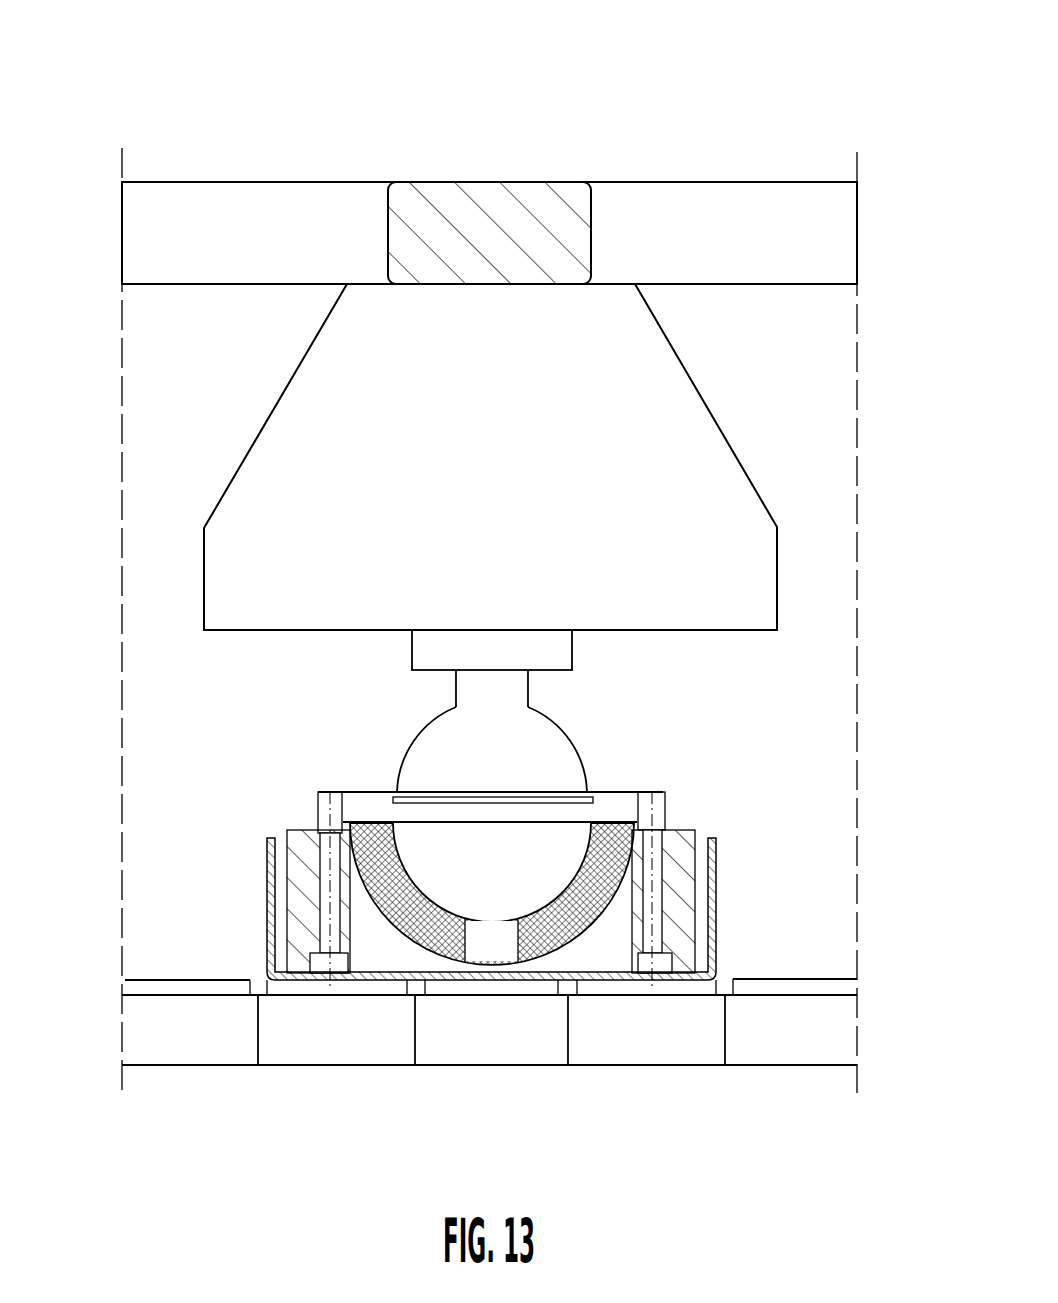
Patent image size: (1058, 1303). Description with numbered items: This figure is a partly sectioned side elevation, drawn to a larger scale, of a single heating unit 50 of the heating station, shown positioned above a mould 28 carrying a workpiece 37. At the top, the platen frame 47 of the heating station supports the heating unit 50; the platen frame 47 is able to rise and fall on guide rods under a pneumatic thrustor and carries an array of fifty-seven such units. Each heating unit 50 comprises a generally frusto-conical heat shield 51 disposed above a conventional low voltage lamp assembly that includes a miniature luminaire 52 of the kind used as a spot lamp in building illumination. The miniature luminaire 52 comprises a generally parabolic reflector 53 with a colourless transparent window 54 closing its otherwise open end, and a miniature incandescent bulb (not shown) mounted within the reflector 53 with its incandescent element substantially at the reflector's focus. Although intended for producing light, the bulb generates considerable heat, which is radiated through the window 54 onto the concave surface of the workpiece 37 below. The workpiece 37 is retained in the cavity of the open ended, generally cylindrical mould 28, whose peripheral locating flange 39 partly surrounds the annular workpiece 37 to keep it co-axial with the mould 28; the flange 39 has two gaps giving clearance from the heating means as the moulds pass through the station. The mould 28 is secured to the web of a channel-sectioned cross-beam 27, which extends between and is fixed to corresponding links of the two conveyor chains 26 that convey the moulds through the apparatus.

The conveyor chains 26 is at (489, 1083).
The cross-beam 27 is at (602, 909).
The mould 28 is at (612, 926).
The workpiece 37 is at (417, 1005).
The peripheral locating flange 39 is at (627, 776).
The platen frame 47 is at (545, 145).
The heating unit 50 is at (525, 273).
The heat shield 51 is at (566, 457).
The miniature luminaire 52 is at (672, 666).
The parabolic reflector 53 is at (319, 718).
The transparent window 54 is at (322, 835).